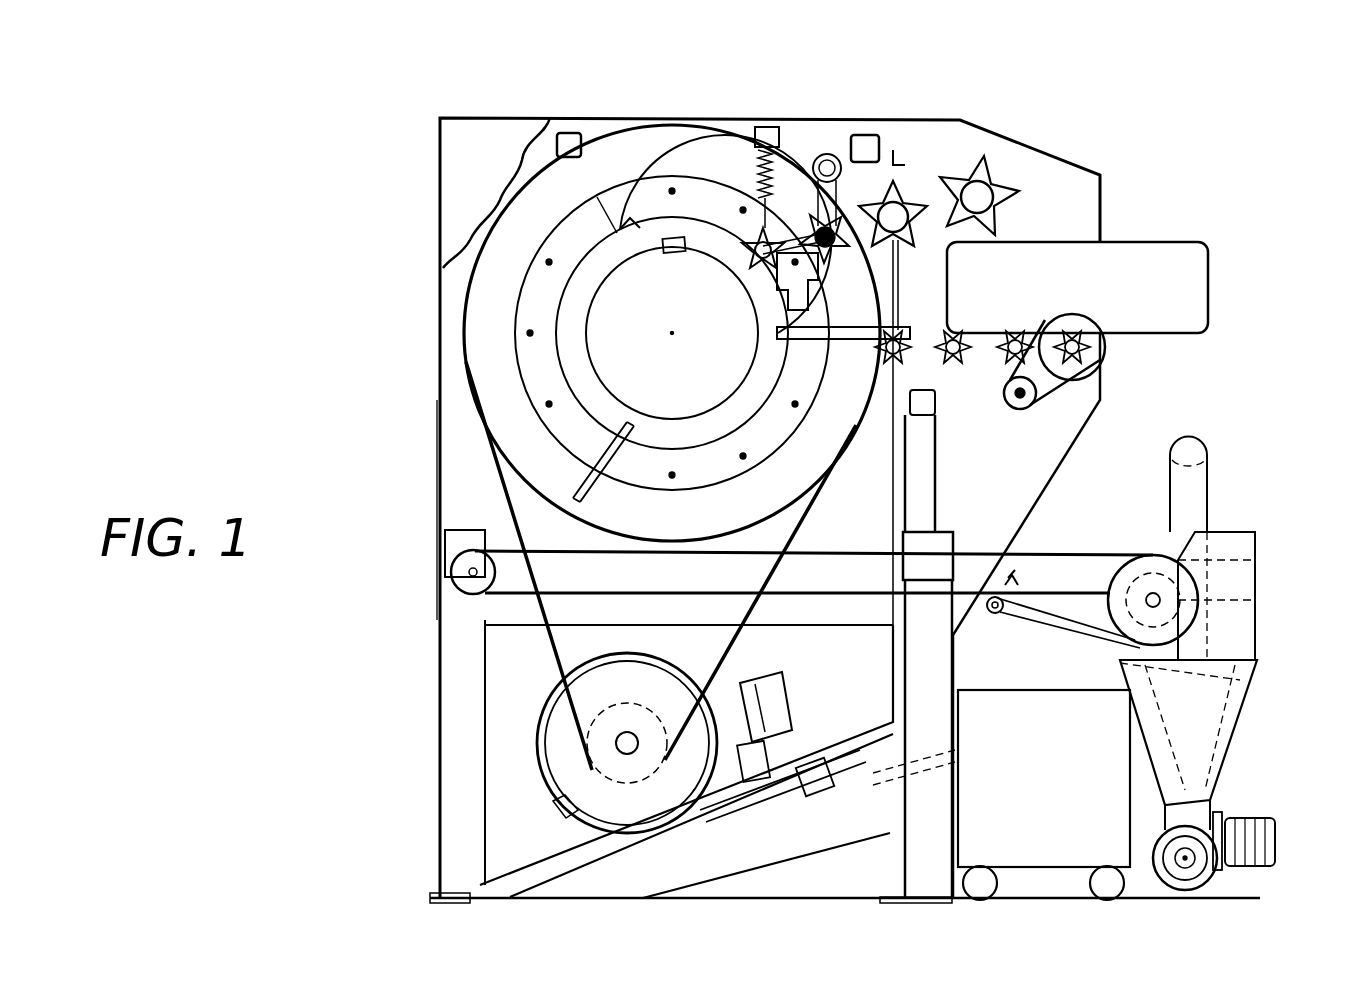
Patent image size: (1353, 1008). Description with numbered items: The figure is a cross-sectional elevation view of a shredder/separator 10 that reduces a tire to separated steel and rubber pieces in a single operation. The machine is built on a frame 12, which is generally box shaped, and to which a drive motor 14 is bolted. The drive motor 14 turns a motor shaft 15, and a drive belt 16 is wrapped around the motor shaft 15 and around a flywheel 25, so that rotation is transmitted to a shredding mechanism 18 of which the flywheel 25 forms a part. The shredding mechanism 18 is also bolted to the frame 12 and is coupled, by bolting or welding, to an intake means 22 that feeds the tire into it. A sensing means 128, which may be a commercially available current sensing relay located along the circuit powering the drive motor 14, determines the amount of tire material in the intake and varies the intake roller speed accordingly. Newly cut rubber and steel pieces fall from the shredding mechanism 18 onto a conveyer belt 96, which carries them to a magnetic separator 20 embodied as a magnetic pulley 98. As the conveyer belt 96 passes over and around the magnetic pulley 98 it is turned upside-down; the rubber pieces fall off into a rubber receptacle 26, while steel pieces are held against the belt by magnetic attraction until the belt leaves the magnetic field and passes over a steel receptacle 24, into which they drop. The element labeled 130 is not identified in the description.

The shredder/separator 10 is at (1110, 106).
The frame 12 is at (436, 470).
The drive motor 14 is at (565, 718).
The motor shaft 15 is at (560, 813).
The drive belt 16 is at (512, 507).
The shredding mechanism 18 is at (494, 345).
The magnetic separator 20 is at (1262, 570).
The intake means 22 is at (1100, 270).
The steel receptacle 24 is at (1020, 742).
The flywheel 25 is at (650, 117).
The rubber receptacle 26 is at (1225, 722).
The conveyer belt 96 is at (830, 548).
The magnetic pulley 98 is at (1142, 560).
The sensing means 128 is at (782, 742).
The star wheels 130 is at (885, 165).